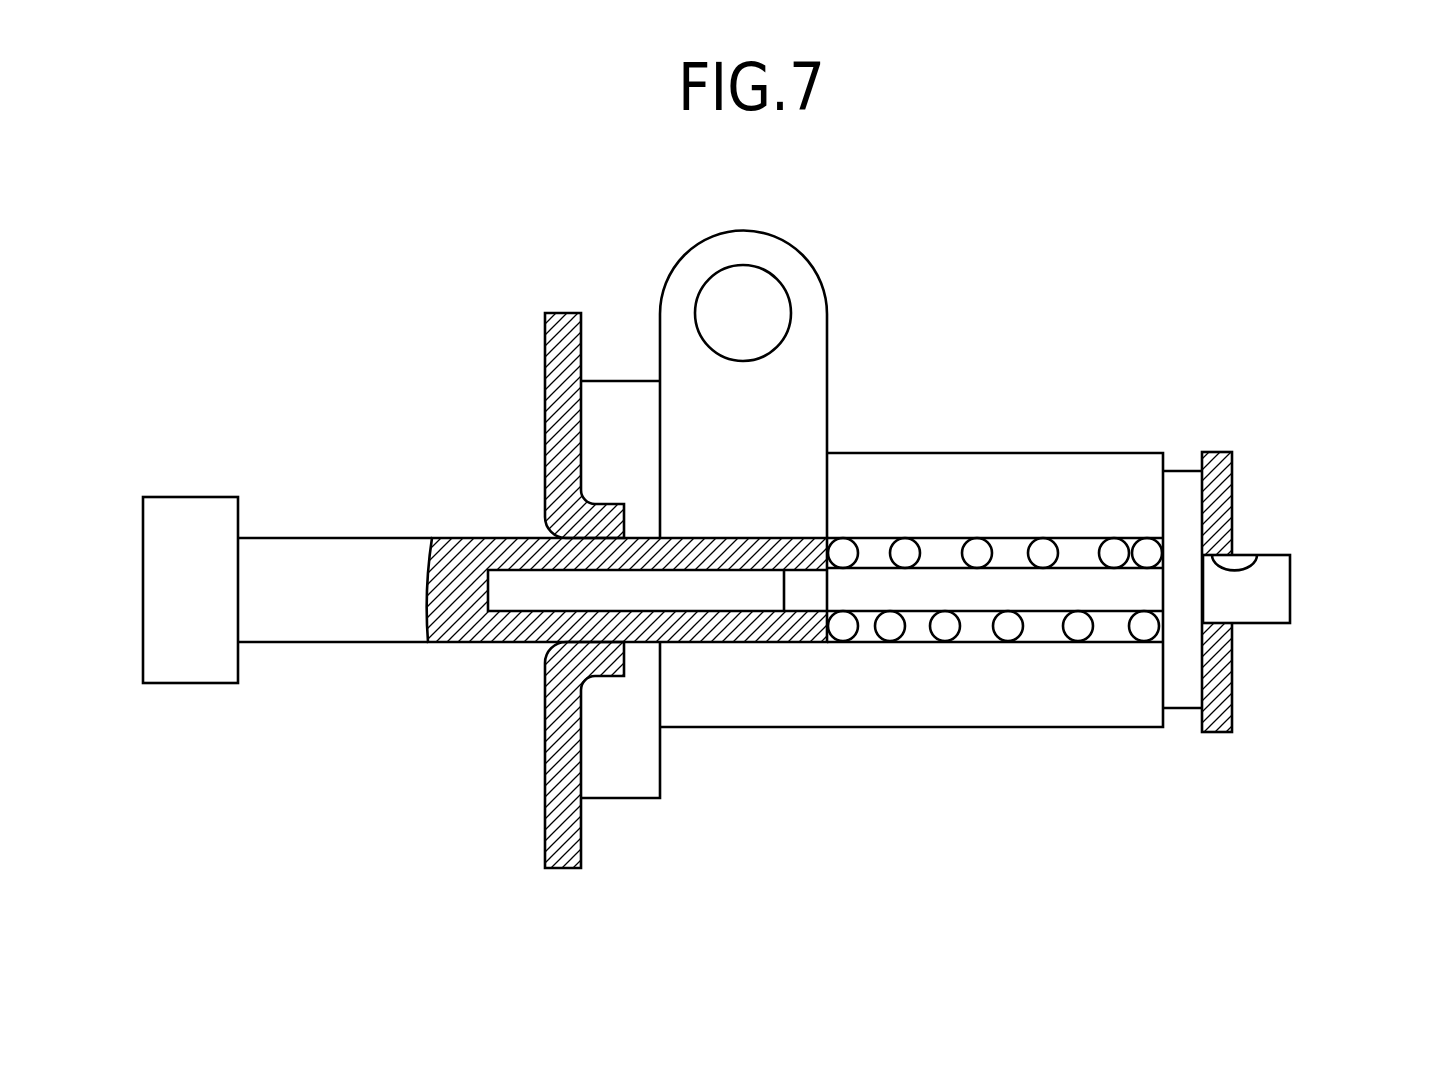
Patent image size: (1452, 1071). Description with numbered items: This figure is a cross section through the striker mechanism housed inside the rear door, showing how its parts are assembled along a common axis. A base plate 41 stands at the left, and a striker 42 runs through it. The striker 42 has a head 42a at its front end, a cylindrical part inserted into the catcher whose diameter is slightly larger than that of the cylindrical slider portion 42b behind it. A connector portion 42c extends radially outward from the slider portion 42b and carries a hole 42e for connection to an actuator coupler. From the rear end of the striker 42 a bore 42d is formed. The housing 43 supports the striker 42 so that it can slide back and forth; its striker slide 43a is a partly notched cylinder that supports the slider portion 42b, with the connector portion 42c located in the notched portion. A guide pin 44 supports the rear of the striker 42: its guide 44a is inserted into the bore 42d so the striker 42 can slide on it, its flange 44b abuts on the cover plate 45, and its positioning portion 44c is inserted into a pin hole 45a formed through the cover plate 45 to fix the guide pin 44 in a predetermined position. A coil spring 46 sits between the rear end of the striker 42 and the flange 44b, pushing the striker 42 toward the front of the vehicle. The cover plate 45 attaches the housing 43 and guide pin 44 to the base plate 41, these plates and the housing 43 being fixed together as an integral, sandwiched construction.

The base plate 41 is at (545, 406).
The striker 42 is at (356, 414).
The head 42a is at (200, 668).
The slider portion 42b is at (312, 630).
The connector portion 42c is at (817, 392).
The bore 42d is at (697, 614).
The hole 42e is at (756, 279).
The housing 43 is at (1012, 470).
The striker slide 43a is at (1088, 545).
The guide pin 44 is at (1251, 643).
The guide 44a is at (1033, 598).
The flange 44b is at (1181, 688).
The positioning portion 44c is at (1268, 592).
The cover plate 45 is at (1233, 470).
The pin hole 45a is at (1260, 556).
The coil spring 46 is at (947, 625).